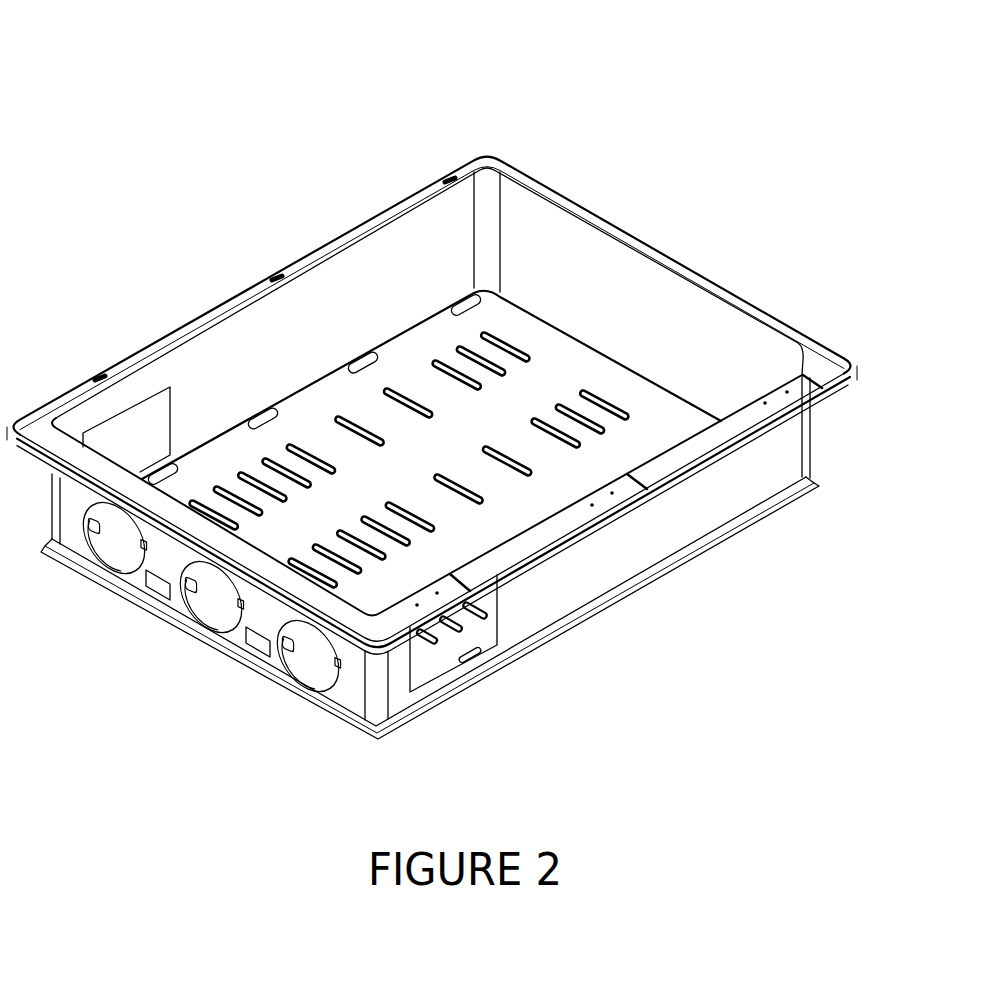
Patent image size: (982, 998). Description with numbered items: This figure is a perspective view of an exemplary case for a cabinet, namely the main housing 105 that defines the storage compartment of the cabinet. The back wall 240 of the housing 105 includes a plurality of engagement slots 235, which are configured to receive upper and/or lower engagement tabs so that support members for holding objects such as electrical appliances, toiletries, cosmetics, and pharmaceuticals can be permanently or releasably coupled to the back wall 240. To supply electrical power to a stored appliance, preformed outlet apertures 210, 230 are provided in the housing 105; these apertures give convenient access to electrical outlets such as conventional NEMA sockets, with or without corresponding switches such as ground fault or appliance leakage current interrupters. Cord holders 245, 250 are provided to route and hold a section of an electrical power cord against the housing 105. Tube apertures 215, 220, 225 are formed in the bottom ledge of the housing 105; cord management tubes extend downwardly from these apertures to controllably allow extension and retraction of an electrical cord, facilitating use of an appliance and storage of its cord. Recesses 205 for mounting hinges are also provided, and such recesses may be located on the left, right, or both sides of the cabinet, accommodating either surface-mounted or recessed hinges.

The main housing 105 is at (431, 157).
The recesses for mounting hinges 205 is at (610, 500).
The outlet aperture 210 is at (473, 633).
The tube aperture 215 is at (322, 668).
The tube aperture 220 is at (240, 618).
The tube aperture 225 is at (130, 550).
The outlet aperture 230 is at (143, 427).
The engagement slots 235 is at (410, 398).
The back wall 240 is at (620, 386).
The cord holder 245 is at (203, 627).
The cord holder 250 is at (288, 680).